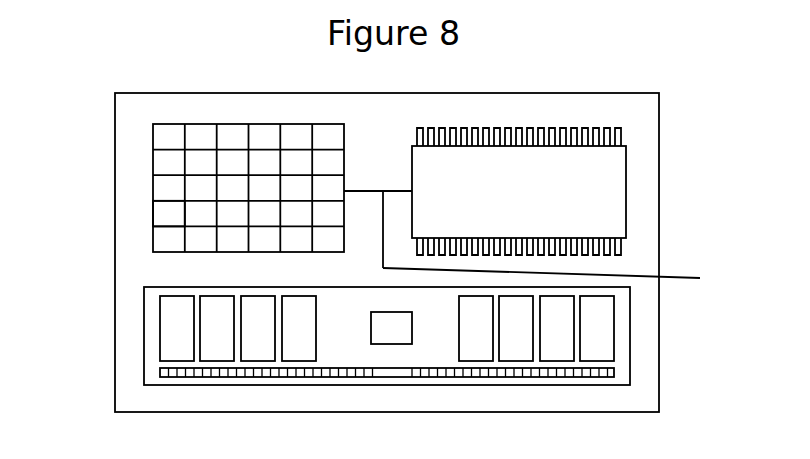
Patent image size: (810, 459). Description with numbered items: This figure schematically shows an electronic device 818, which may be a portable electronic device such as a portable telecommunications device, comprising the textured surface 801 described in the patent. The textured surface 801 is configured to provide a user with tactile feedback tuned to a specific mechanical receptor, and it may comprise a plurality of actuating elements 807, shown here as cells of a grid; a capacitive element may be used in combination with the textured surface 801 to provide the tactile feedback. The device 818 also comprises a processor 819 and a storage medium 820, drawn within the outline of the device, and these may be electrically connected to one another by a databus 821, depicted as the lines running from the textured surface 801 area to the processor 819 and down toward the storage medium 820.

The electronic device 818 is at (542, 108).
The textured surface 801 is at (153, 140).
The actuating element 807 is at (170, 213).
The processor 819 is at (599, 184).
The databus 821 is at (542, 242).
The storage medium 820 is at (601, 322).